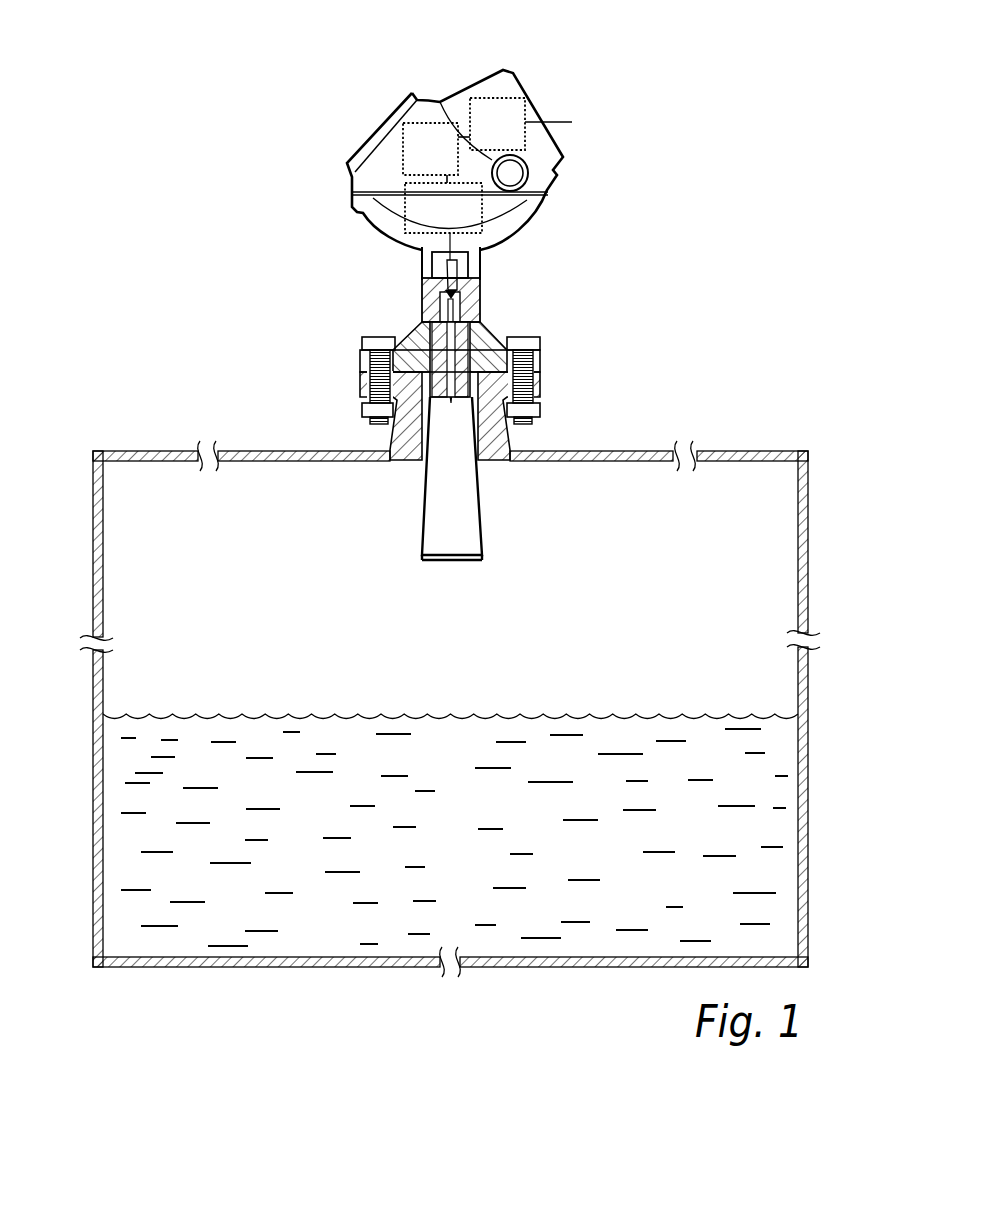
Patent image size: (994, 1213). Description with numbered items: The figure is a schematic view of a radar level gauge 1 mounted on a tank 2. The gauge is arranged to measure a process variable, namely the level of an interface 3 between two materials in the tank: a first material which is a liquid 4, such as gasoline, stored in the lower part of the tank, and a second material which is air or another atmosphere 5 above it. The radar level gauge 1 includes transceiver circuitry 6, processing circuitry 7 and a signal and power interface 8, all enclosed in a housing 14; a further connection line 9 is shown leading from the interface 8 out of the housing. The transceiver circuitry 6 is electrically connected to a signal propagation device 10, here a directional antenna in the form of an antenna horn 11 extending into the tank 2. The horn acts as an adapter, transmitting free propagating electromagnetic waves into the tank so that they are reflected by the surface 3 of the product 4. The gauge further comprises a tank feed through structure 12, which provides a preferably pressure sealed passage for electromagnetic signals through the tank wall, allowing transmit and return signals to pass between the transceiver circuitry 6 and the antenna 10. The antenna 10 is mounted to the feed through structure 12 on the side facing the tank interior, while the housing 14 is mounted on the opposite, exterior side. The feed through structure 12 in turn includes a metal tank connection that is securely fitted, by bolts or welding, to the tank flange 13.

The radar level gauge 1 is at (620, 110).
The tank 2 is at (605, 451).
The interface 3 is at (226, 716).
The liquid 4 is at (302, 853).
The atmosphere 5 is at (307, 592).
The transceiver circuitry 6 is at (383, 225).
The processing circuitry 7 is at (403, 150).
The signal and power interface 8 is at (505, 99).
The external communication line 9 is at (567, 122).
The signal propagation device 10 is at (410, 487).
The antenna horn 11 is at (478, 513).
The tank feed through structure 12 is at (514, 295).
The tank flange 13 is at (513, 443).
The housing 14 is at (530, 223).